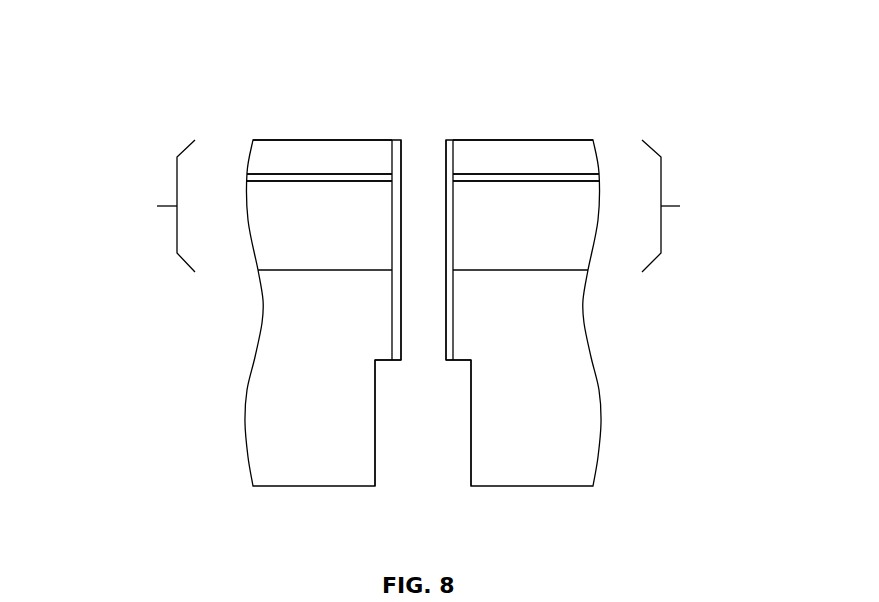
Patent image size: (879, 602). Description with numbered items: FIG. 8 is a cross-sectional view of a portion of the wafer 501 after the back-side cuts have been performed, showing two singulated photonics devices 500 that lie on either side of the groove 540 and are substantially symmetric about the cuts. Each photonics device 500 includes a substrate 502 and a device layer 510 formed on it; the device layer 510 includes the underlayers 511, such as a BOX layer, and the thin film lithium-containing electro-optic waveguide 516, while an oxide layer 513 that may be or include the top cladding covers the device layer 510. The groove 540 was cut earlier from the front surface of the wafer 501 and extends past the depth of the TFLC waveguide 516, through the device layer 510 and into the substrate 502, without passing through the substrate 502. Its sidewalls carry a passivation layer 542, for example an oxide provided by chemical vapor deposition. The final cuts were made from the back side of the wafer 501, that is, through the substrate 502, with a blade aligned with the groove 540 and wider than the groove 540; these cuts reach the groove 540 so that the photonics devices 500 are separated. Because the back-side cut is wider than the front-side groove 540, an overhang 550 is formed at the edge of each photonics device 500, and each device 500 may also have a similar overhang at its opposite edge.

The photonics device 500 is at (81, 165).
The wafer 501 is at (442, 36).
The substrate 502 is at (345, 331).
The device layer 510 is at (419, 206).
The underlayers 511 is at (337, 231).
The oxide layer 513 is at (366, 167).
The TFLC electro-optic waveguide 516 is at (313, 174).
The groove 540 is at (422, 96).
The passivation layer 542 is at (397, 139).
The overhang 550 is at (394, 392).